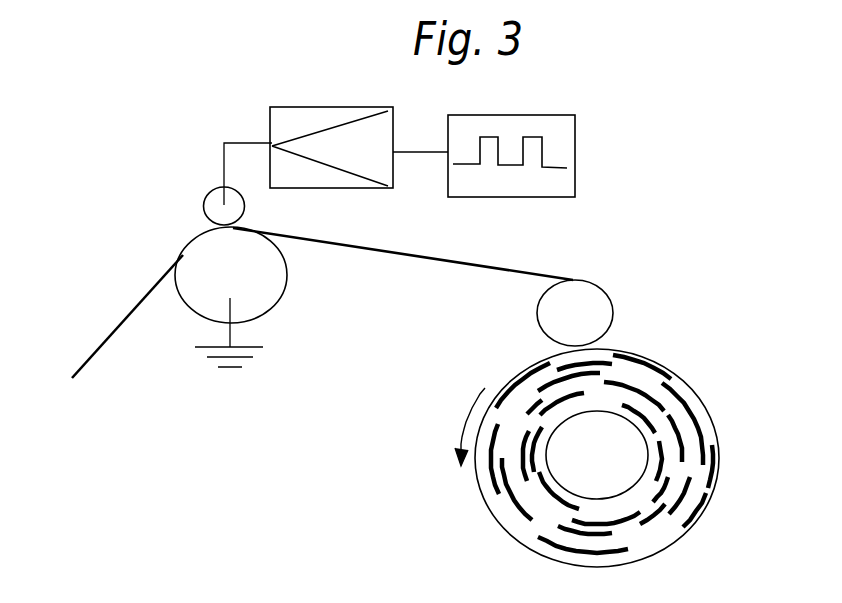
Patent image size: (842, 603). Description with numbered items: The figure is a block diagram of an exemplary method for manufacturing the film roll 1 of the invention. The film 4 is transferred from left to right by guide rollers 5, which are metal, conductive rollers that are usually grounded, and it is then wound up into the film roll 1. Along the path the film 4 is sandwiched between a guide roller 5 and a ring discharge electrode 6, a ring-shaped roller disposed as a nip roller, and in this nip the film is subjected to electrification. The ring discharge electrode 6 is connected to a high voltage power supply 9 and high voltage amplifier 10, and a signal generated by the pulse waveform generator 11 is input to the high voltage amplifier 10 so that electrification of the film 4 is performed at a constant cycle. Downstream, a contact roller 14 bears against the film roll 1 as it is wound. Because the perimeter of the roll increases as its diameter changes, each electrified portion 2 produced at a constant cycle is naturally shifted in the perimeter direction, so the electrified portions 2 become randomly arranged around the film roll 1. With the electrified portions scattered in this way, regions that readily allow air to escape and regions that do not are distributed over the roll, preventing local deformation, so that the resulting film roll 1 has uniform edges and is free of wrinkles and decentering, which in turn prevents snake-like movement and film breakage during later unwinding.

The film roll 1 is at (490, 508).
The electrified portion 2 is at (675, 372).
The film 4 is at (130, 315).
The guide roller 5 is at (255, 290).
The ring discharge electrode 6 is at (203, 197).
The high voltage power supply 9 is at (323, 107).
The high voltage amplifier 10 is at (331, 147).
The pulse waveform generator 11 is at (511, 141).
The contact roller 14 is at (597, 307).